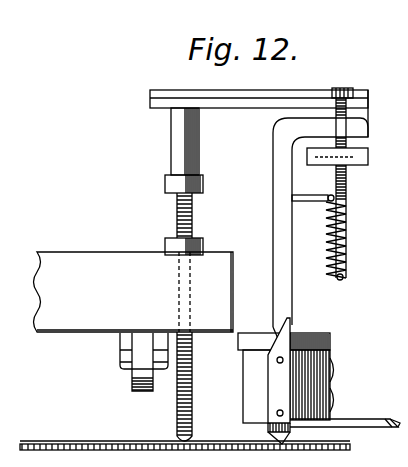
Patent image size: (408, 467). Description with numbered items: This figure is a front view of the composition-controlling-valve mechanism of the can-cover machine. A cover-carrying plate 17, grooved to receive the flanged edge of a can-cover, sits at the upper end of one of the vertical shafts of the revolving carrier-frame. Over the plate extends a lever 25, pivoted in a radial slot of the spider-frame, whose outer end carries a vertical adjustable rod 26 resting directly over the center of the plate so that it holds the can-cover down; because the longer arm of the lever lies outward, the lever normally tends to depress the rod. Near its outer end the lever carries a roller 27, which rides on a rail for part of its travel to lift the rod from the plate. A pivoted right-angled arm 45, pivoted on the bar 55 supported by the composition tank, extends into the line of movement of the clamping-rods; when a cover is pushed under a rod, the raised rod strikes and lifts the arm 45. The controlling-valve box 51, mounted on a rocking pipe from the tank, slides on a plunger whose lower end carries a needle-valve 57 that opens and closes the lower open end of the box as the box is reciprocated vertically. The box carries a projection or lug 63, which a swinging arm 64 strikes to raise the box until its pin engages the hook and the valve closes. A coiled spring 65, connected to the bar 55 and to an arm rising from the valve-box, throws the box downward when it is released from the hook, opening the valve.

The cover-carrying plate 17 is at (132, 441).
The lever 25 is at (134, 292).
The vertical adjustable rod 26 is at (190, 357).
The roller 27 is at (130, 381).
The pivoted right-angled arm 45 is at (257, 90).
The controlling-valve box 51 is at (243, 386).
The bar 55 is at (368, 156).
The needle-valve 57 is at (290, 437).
The projection or lug 63 is at (386, 436).
The swinging arm 64 is at (276, 208).
The coiled spring 65 is at (346, 225).